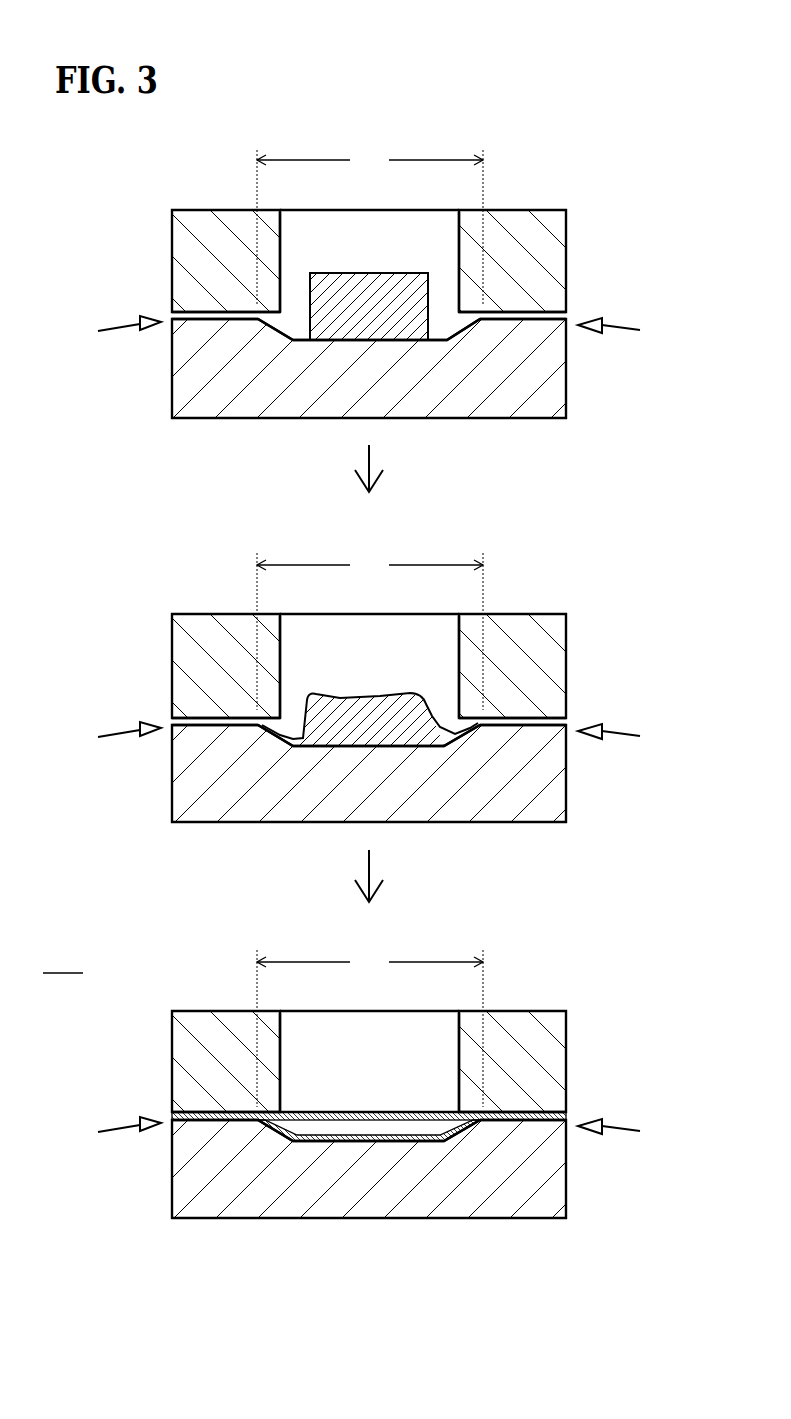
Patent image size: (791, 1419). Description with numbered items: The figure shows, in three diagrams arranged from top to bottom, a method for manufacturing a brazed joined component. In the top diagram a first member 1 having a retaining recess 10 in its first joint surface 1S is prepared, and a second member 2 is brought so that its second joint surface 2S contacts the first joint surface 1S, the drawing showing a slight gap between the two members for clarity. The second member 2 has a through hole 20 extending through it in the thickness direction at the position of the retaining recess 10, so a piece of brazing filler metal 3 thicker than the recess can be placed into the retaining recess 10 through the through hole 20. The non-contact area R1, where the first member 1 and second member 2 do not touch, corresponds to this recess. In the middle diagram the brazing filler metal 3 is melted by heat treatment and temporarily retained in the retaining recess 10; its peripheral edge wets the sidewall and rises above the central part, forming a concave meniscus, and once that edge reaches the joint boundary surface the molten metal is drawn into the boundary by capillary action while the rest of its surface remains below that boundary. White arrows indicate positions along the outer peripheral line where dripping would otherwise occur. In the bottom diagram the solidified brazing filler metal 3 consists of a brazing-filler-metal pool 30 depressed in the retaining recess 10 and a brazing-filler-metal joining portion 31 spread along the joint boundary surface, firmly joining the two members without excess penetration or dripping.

The first member 1 is at (567, 378).
The second member 2 is at (567, 257).
The brazing filler metal 3 is at (353, 272).
The retaining recess 10 is at (445, 323).
The through hole 20 is at (434, 237).
The first joint surface 1S is at (543, 312).
The second joint surface 2S is at (523, 321).
The brazing-filler-metal pool 30 is at (343, 1137).
The brazing-filler-metal joining portion 31 is at (203, 1113).
The non-contact area R1 is at (370, 626).